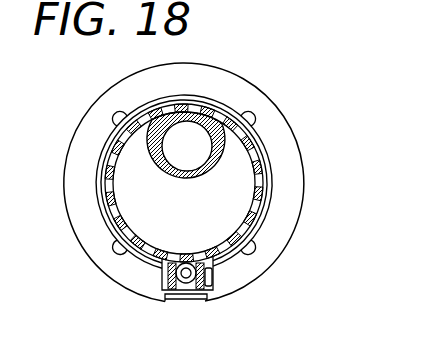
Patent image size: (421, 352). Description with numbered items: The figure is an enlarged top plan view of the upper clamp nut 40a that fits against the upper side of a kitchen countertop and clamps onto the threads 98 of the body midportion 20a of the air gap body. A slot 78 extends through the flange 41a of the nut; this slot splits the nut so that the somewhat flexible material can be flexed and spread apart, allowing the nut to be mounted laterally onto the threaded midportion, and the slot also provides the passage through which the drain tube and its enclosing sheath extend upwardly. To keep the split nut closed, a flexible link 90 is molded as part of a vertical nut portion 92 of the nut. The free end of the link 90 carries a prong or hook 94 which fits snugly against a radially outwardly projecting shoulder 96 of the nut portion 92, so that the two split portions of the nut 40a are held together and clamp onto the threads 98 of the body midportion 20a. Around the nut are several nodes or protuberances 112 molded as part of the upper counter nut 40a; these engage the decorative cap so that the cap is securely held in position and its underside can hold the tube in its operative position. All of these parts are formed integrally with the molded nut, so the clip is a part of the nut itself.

The upper clamp nut 40a is at (248, 84).
The flange of the upper nut 41a is at (298, 153).
The vertical nut portion 92 is at (268, 209).
The threads 98 is at (110, 219).
The body midportion 20a is at (113, 166).
The nodes or protuberances 112 is at (254, 116).
The prong or hook 94 is at (214, 274).
The flexible link 90 is at (186, 290).
The shoulder 96 is at (214, 289).
The slot 78 is at (166, 301).